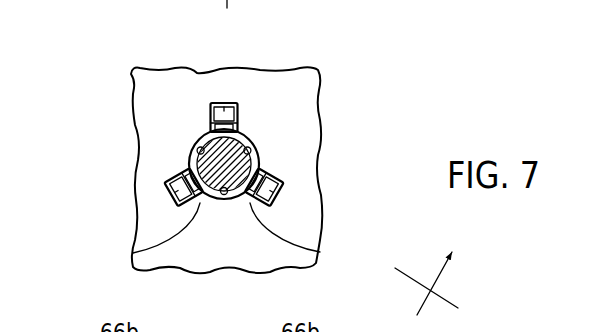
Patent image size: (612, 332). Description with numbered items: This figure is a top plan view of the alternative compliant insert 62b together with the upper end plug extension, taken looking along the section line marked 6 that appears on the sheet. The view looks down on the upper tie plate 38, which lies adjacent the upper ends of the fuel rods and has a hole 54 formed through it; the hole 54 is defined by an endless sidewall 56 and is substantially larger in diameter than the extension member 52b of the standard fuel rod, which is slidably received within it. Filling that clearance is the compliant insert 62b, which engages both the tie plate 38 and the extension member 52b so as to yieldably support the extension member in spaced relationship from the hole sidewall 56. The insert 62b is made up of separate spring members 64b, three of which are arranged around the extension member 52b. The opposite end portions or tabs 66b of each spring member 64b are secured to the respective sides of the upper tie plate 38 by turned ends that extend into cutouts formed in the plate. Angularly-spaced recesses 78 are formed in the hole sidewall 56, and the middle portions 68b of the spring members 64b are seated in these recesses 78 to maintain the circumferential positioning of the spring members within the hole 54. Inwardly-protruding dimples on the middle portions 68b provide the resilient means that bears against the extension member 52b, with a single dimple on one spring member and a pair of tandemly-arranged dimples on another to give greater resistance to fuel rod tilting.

The upper tie plate 38 is at (304, 227).
The extension member 52b is at (256, 140).
The hole 54 is at (207, 135).
The sidewall 56 is at (219, 200).
The compliant insert 62b is at (171, 142).
The spring member 64b is at (203, 107).
The tab 66b is at (227, 108).
The middle portion 68b is at (245, 124).
The recess 78 is at (243, 127).
The section line 6 is at (426, 292).